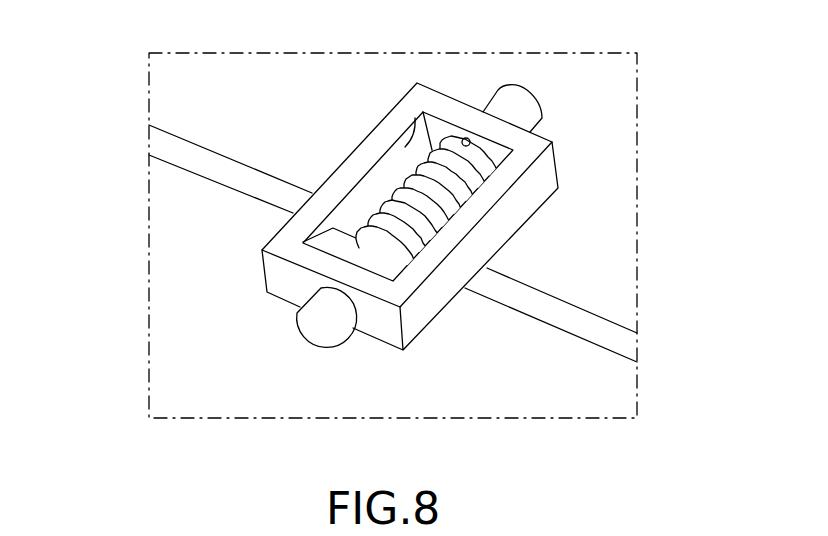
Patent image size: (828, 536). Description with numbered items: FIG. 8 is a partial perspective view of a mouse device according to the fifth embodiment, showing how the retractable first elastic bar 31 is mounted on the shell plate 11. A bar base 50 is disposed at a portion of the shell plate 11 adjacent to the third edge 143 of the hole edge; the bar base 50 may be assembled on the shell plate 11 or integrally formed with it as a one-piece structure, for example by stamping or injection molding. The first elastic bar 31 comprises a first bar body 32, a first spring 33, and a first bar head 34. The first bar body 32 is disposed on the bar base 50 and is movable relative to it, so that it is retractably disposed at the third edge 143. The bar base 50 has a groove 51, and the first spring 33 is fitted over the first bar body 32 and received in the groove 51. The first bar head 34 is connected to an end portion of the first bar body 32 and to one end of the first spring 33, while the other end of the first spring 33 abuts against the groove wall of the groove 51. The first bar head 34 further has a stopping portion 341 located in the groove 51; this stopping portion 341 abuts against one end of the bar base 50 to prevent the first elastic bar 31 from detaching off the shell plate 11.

The shell plate 11 is at (598, 110).
The first elastic bar 31 is at (378, 187).
The first bar body 32 is at (541, 118).
The first spring 33 is at (458, 203).
The first bar head 34 is at (325, 310).
The bar base 50 is at (490, 237).
The groove 51 is at (415, 118).
The third edge 143 is at (182, 155).
The stopping portion 341 is at (337, 243).